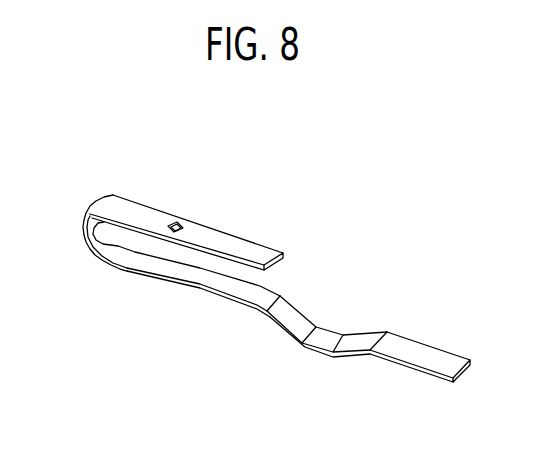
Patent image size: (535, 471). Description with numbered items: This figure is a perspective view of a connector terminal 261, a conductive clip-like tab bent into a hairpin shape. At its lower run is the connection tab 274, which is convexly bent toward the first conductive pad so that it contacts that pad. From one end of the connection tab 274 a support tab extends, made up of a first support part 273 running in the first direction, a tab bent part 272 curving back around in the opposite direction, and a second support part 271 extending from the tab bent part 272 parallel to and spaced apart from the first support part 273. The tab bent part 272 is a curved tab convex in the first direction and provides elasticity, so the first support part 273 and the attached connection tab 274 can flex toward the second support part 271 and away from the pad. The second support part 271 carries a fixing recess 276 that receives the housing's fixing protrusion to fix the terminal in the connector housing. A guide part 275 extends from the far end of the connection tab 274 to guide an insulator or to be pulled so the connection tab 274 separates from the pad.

The connector terminal 261 is at (366, 282).
The second support part 271 is at (248, 243).
The tab bent part 272 is at (88, 214).
The first support part 273 is at (202, 283).
The connection tab 274 is at (323, 345).
The guide part 275 is at (423, 352).
The fixing recess 276 is at (178, 223).